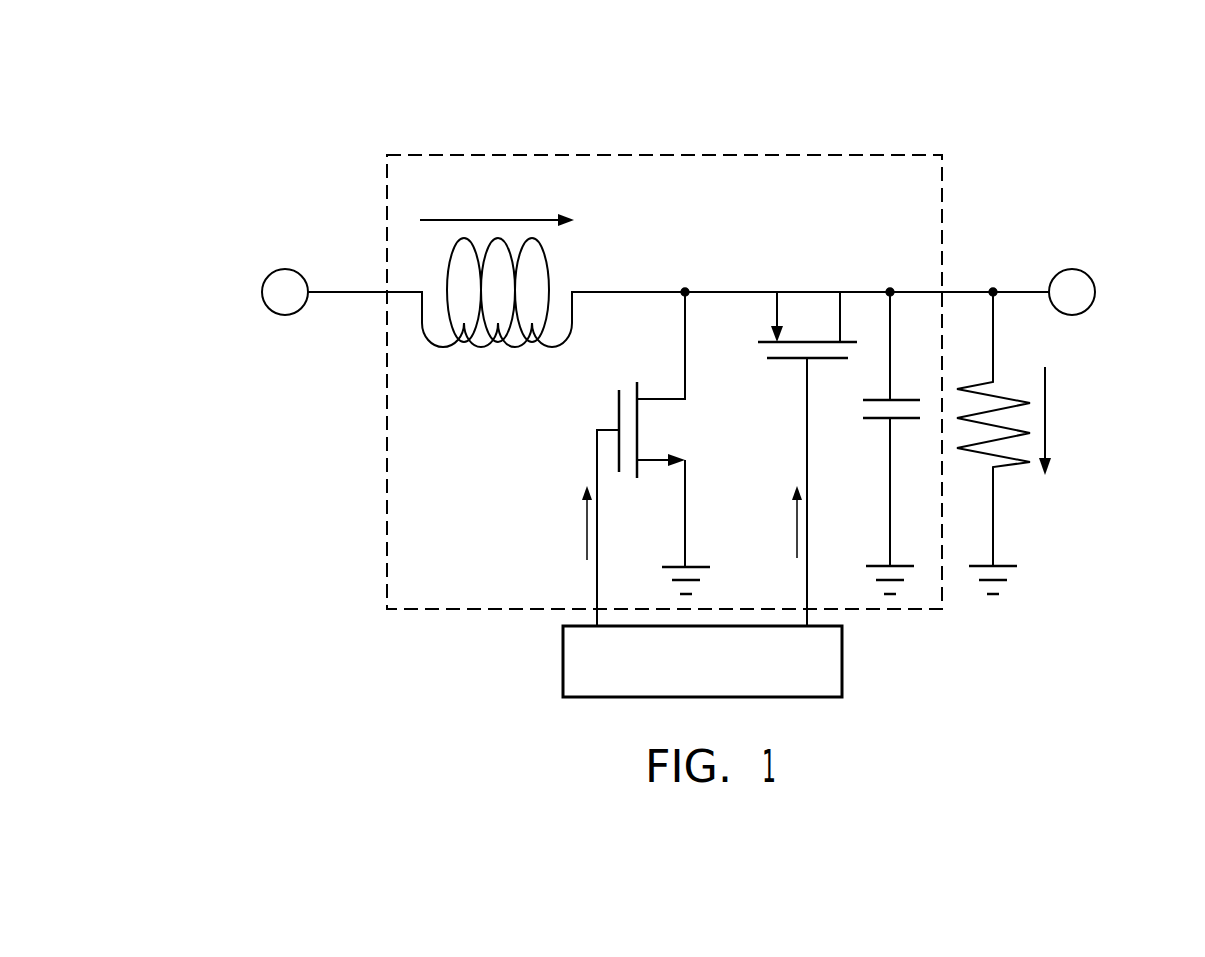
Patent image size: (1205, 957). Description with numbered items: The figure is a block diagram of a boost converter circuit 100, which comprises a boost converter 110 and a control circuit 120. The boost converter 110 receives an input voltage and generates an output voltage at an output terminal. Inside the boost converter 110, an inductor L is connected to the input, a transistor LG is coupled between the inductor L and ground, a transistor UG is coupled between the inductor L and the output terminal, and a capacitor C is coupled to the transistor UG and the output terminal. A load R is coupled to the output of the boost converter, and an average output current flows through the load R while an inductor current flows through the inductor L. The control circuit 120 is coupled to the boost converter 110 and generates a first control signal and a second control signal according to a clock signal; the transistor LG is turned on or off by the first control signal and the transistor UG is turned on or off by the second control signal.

The boost converter circuit 100 is at (165, 82).
The boost converter 110 is at (388, 154).
The control circuit 120 is at (843, 661).
The inductor L is at (481, 348).
The capacitor C is at (903, 400).
The load R is at (1005, 395).
The transistor UG is at (807, 305).
The transistor LG is at (619, 414).